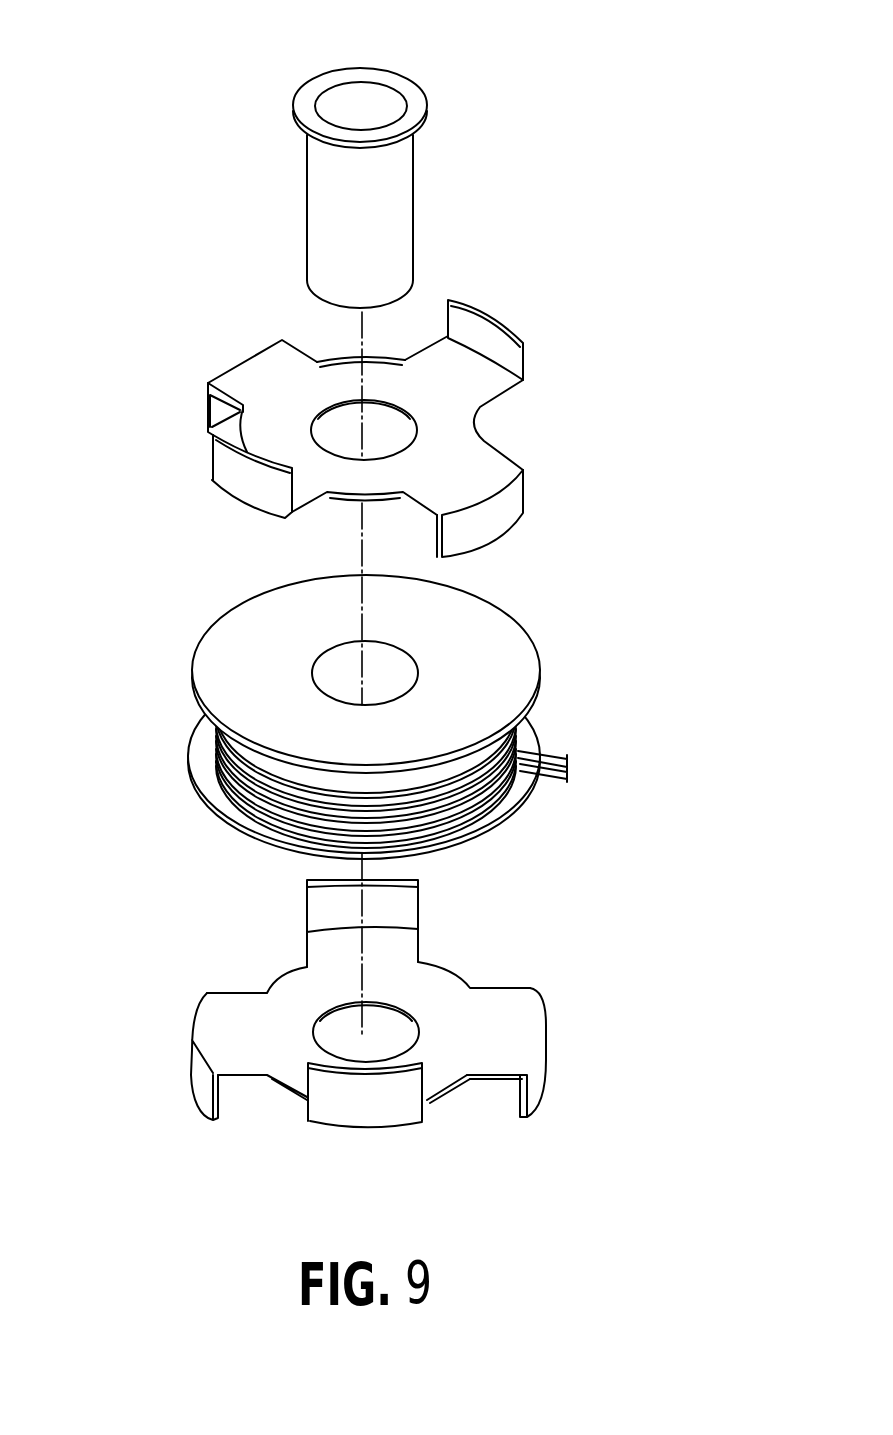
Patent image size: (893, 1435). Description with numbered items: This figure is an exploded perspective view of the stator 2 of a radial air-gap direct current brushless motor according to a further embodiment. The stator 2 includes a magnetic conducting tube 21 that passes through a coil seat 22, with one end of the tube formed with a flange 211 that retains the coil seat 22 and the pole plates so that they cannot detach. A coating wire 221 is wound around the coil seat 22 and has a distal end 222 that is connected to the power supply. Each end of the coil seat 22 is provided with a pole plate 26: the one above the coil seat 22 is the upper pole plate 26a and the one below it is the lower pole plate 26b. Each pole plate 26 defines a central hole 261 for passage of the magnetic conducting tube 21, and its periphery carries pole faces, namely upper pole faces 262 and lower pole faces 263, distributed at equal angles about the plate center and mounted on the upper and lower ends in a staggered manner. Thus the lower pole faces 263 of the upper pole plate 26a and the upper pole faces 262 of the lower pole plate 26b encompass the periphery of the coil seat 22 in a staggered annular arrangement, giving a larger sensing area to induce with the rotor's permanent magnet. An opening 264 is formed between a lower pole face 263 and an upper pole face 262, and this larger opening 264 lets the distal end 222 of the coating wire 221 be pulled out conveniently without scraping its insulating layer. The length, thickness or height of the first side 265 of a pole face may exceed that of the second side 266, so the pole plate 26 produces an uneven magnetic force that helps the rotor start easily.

The stator 2 is at (113, 283).
The magnetic conducting tube 21 is at (398, 185).
The flange 211 is at (417, 98).
The coil seat 22 is at (547, 660).
The coating wire 221 is at (478, 785).
The distal end 222 is at (550, 780).
The pole plate 26 is at (492, 262).
The upper pole plate 26a is at (480, 421).
The lower pole plate 26b is at (460, 1013).
The central hole 261 is at (333, 422).
The upper pole face 262 is at (508, 323).
The lower pole face 263 is at (505, 513).
The opening 264 is at (318, 532).
The first side 265 is at (447, 300).
The second side 266 is at (523, 363).